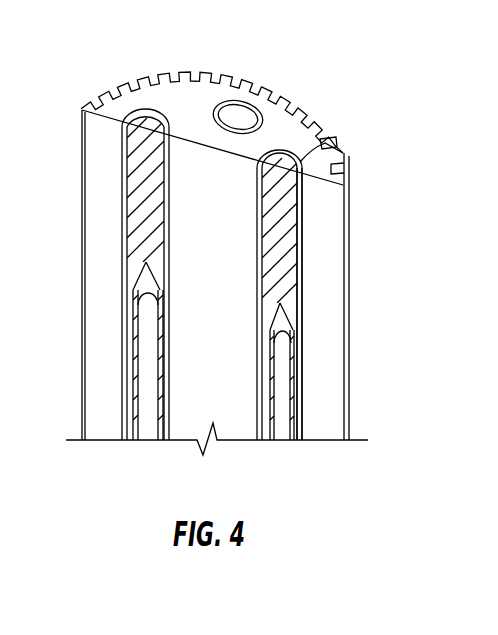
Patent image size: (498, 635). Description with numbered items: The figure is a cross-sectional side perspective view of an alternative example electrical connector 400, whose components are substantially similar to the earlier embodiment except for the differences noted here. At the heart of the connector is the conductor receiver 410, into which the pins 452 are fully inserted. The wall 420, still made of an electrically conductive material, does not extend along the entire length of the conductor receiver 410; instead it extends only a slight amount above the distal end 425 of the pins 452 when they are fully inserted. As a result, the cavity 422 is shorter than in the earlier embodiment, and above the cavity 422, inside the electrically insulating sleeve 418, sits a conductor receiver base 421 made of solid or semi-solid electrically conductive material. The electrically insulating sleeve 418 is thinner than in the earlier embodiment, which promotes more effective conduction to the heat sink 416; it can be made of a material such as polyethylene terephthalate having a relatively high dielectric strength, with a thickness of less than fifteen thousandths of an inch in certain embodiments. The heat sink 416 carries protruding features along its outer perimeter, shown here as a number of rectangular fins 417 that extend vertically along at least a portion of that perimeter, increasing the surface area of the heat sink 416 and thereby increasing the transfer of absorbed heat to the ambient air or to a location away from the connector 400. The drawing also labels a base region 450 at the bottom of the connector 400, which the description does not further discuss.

The electrical connector 400 is at (127, 49).
The conductor receiver 410 is at (230, 57).
The heat sink 416 is at (226, 217).
The rectangular fins 417 is at (290, 92).
The electrically insulating sleeve 418 is at (337, 143).
The wall 420 is at (299, 400).
The conductor receiver base 421 is at (288, 238).
The cavity 422 is at (304, 307).
The distal end 425 is at (285, 352).
The base 450 is at (140, 452).
The pins 452 is at (281, 393).